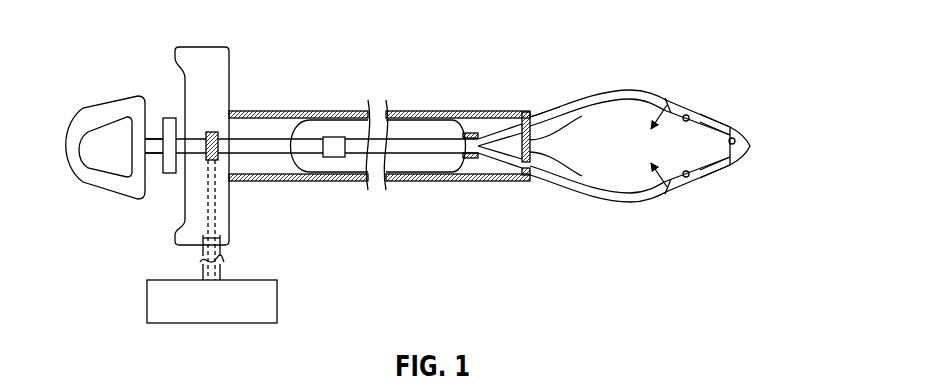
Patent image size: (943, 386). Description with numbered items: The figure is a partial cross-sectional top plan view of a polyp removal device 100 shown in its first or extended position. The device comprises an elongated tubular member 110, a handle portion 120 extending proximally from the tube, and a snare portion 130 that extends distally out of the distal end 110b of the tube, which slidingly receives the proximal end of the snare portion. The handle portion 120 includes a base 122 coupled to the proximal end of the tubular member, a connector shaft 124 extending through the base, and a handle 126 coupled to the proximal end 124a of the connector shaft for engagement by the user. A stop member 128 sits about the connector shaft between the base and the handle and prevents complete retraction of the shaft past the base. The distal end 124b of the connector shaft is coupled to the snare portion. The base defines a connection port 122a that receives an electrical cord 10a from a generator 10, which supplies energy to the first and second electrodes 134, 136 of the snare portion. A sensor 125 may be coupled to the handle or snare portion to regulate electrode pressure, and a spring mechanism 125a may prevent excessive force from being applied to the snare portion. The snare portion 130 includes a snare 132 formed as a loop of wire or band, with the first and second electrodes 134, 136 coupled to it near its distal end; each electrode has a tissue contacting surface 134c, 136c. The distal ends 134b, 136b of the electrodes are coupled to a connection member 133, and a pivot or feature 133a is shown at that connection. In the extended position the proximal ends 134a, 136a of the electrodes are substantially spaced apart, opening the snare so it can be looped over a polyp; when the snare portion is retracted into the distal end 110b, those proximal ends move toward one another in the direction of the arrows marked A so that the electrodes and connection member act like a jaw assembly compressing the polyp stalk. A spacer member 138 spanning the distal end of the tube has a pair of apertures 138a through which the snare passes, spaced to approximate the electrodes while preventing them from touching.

The generator 10 is at (278, 300).
The electrical cord 10a is at (222, 274).
The polyp removal device 100 is at (457, 41).
The elongated tubular member 110 is at (338, 110).
The distal end of tubular member 110b is at (255, 182).
The handle portion 120 is at (128, 229).
The base 122 is at (193, 46).
The connection port 122a is at (202, 238).
The connector shaft 124 is at (415, 148).
The proximal end of connector shaft 124a is at (154, 138).
The distal end of connector shaft 124b is at (482, 122).
The sensor 125 is at (470, 133).
The spring mechanism 125a is at (336, 158).
The handle 126 is at (100, 112).
The stop member 128 is at (160, 122).
The snare portion 130 is at (683, 65).
The snare 132 is at (600, 85).
The connection member 133 is at (750, 146).
The pivot 133a is at (738, 135).
The first electrode 134 is at (706, 106).
The proximal end of first electrode 134a is at (683, 102).
The distal end of first electrode 134b is at (735, 125).
The tissue contacting surface of first electrode 134c is at (672, 100).
The second electrode 136 is at (706, 184).
The proximal end of second electrode 136a is at (683, 192).
The distal end of second electrode 136b is at (733, 168).
The tissue contacting surface of second electrode 136c is at (672, 193).
The spacer member 138 is at (536, 148).
The apertures 138a is at (533, 116).